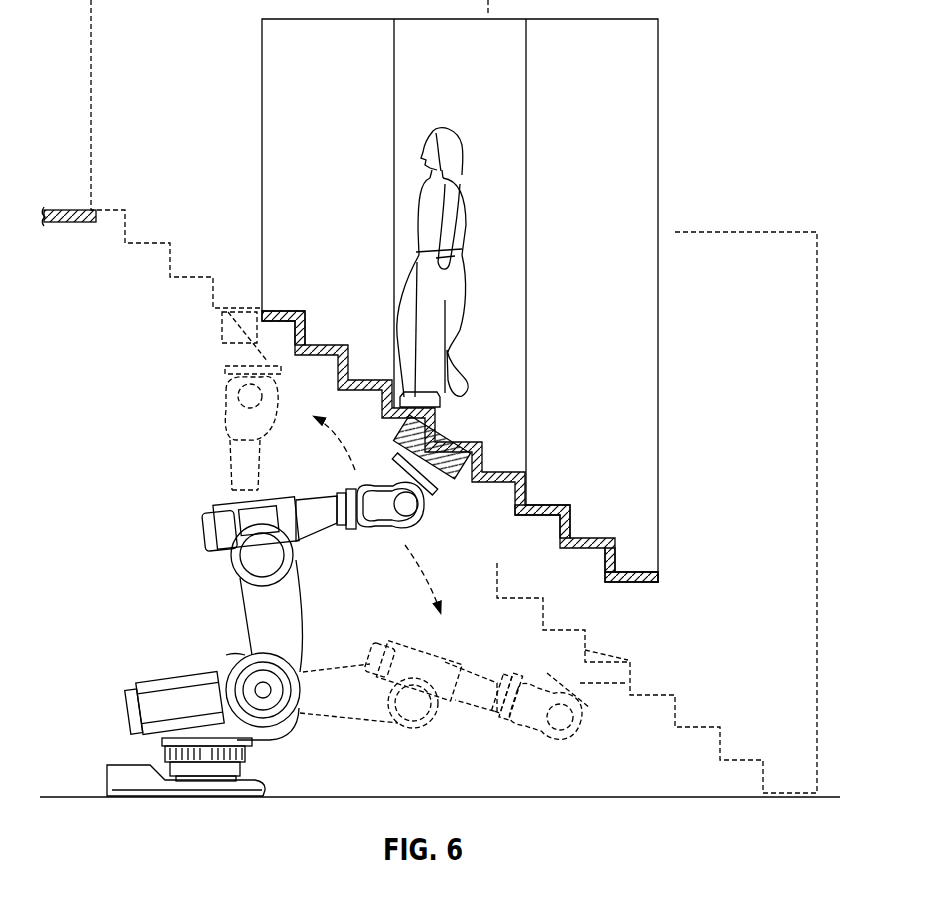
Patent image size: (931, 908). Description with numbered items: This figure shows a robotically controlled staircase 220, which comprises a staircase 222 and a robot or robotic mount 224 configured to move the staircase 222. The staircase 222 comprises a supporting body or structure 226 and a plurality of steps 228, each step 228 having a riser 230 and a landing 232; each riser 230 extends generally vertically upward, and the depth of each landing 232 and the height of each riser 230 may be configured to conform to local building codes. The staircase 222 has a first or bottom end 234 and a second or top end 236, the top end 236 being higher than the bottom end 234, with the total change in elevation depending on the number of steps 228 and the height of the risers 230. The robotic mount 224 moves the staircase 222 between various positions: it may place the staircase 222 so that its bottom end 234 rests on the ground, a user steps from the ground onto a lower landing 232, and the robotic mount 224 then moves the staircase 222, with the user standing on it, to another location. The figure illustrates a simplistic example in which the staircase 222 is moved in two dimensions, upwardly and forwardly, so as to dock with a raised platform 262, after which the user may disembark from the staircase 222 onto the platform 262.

The robotically controlled staircase 220 is at (176, 401).
The staircase 222 is at (666, 511).
The robotic mount 224 is at (199, 635).
The supporting body 226 is at (545, 516).
The step 228 is at (491, 456).
The riser 230 is at (619, 551).
The landing 232 is at (603, 536).
The bottom end 234 is at (670, 578).
The top end 236 is at (257, 291).
The raised platform 262 is at (66, 224).